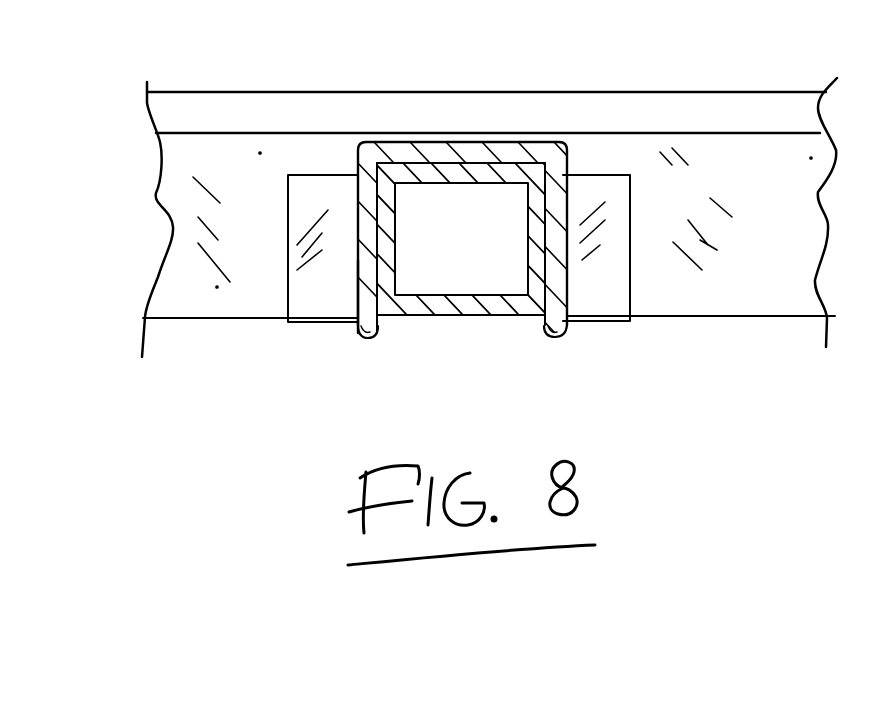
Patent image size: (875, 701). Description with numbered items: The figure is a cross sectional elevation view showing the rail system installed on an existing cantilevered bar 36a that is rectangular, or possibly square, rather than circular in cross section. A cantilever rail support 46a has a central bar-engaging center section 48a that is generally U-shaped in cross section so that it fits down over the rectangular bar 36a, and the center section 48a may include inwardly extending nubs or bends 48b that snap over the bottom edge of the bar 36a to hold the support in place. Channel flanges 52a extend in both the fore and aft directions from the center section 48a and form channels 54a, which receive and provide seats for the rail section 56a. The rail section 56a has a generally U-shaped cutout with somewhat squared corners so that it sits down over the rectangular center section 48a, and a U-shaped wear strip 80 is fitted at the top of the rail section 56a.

The wear strip 80 is at (486, 77).
The channel 54a is at (277, 235).
The rail section 56a is at (712, 247).
The channel flange 52a is at (592, 190).
The cantilever rail support 46a is at (245, 352).
The cantilevered bar 36a is at (475, 290).
The center section 48a is at (489, 319).
The nub 48b is at (390, 349).